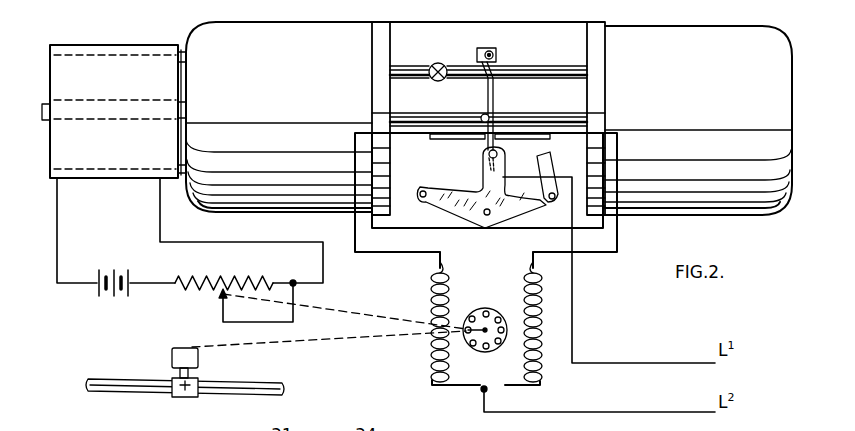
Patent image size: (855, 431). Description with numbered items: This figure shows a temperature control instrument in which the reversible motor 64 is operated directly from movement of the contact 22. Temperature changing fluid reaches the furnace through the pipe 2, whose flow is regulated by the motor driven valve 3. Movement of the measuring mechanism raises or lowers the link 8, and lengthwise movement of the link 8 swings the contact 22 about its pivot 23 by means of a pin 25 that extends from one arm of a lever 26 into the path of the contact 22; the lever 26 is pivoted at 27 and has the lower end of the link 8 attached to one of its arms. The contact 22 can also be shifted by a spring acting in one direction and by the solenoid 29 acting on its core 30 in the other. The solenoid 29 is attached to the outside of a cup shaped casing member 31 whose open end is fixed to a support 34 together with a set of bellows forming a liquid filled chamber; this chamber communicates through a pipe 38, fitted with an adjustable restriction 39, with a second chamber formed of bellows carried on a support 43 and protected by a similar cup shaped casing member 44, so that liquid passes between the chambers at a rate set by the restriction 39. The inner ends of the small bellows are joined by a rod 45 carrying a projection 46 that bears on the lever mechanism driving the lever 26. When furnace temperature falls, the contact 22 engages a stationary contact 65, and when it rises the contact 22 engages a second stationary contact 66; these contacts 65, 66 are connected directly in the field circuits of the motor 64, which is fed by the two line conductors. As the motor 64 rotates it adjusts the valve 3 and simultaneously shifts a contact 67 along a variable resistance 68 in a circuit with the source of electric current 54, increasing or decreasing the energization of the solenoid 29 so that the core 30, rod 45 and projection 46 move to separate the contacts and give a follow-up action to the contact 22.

The pipe 2 is at (232, 390).
The motor driven valve 3 is at (181, 396).
The link 8 is at (552, 162).
The contact 22 is at (495, 104).
The pivot 23 is at (489, 48).
The pin 25 is at (488, 155).
The lever 26 is at (440, 195).
The pivot 27 is at (486, 216).
The solenoid 29 is at (104, 45).
The core 30 is at (123, 105).
The cup shaped casing member 31 is at (260, 22).
The support 34 is at (380, 28).
The pipe 38 is at (406, 66).
The adjustable restriction 39 is at (438, 63).
The support 43 is at (597, 30).
The cup shaped casing member 44 is at (696, 44).
The rod 45 is at (406, 114).
The projection 46 is at (481, 116).
The source of electric current 54 is at (125, 300).
The reversible motor 64 is at (480, 345).
The stationary contact 65 is at (436, 140).
The second stationary contact 66 is at (526, 140).
The contact 67 is at (220, 297).
The variable resistance 68 is at (222, 280).